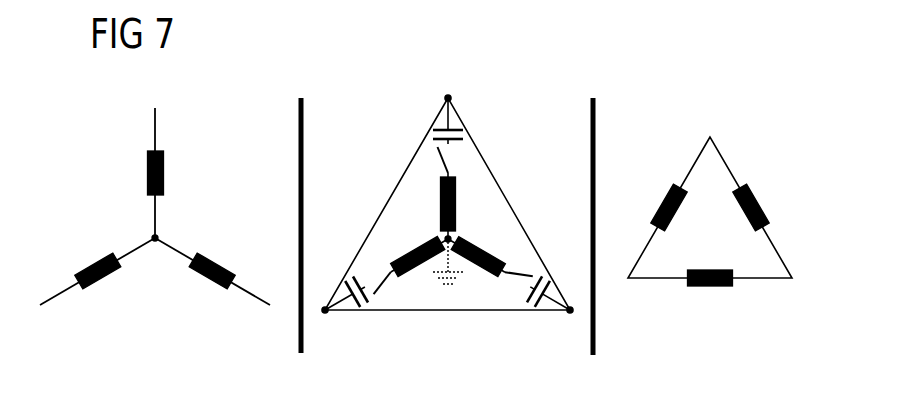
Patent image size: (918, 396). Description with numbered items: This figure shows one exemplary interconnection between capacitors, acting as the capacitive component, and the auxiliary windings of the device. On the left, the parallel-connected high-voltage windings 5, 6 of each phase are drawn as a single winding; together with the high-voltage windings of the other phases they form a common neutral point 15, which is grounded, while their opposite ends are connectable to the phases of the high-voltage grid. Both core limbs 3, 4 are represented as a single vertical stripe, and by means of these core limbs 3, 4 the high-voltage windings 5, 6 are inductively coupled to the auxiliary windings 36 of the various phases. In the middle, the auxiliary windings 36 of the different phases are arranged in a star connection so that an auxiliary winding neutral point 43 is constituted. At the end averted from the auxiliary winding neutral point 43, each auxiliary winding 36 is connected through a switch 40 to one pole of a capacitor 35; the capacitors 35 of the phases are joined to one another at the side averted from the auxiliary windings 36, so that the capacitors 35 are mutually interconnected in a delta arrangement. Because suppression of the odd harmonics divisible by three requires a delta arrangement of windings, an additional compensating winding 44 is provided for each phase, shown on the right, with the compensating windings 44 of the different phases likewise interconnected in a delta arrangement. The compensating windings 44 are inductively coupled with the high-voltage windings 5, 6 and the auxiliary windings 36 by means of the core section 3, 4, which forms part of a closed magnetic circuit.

The core limb 3 is at (411, 219).
The core limb 4 is at (299, 115).
The high-voltage winding 5 is at (157, 213).
The high-voltage winding 6 is at (147, 170).
The common neutral point 15 is at (155, 241).
The capacitor 35 is at (462, 141).
The auxiliary winding 36 is at (458, 207).
The switch 40 is at (442, 160).
The auxiliary winding neutral point 43 is at (446, 238).
The compensating winding 44 is at (662, 198).